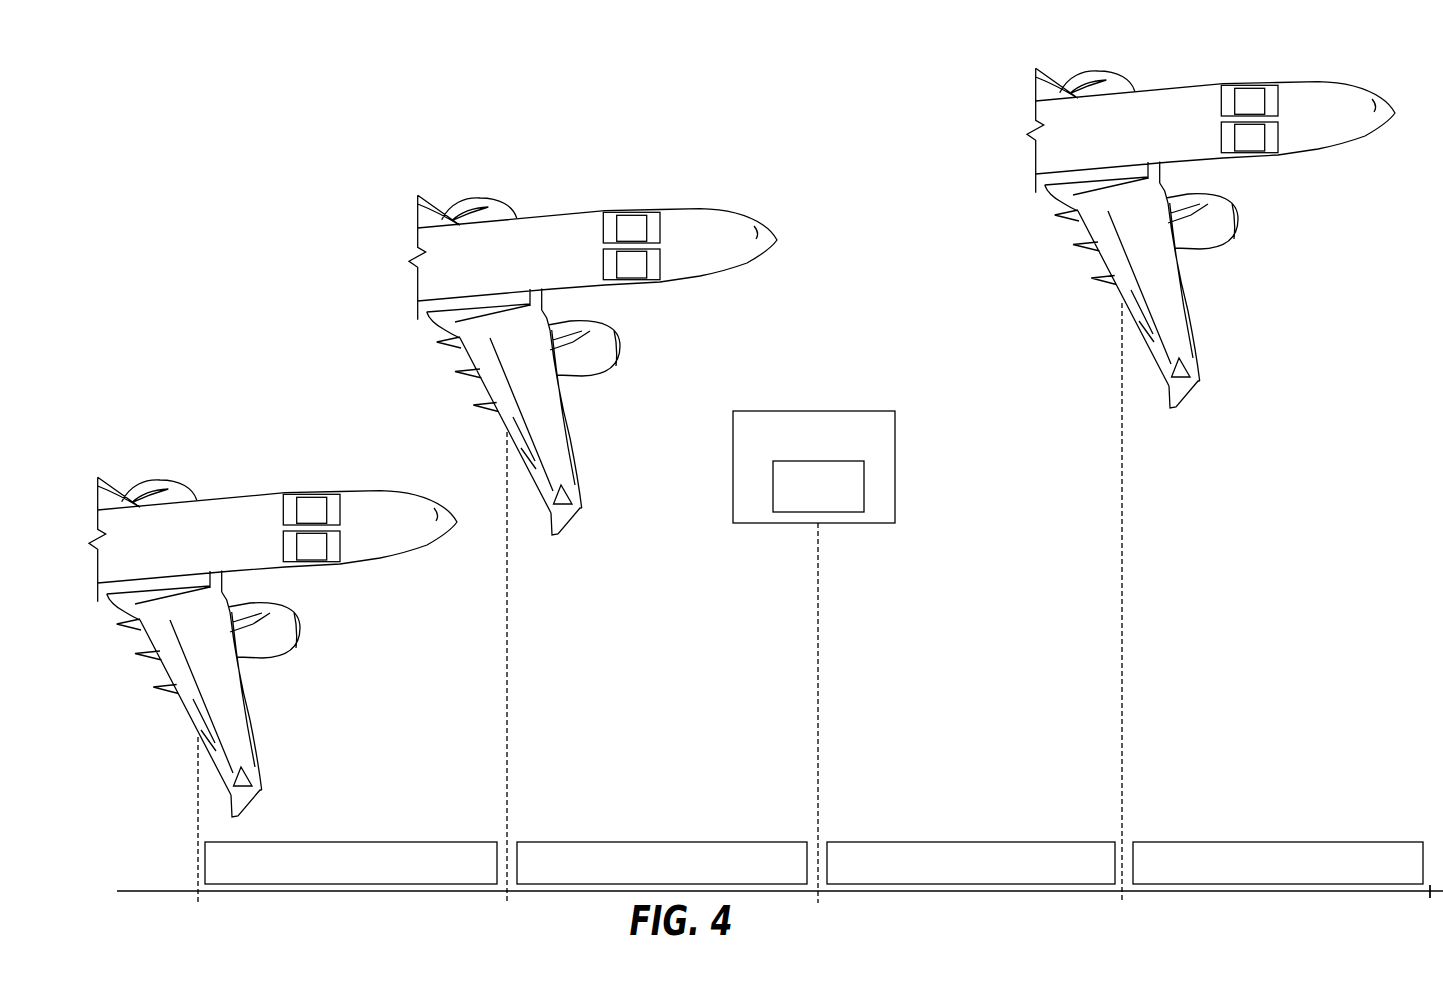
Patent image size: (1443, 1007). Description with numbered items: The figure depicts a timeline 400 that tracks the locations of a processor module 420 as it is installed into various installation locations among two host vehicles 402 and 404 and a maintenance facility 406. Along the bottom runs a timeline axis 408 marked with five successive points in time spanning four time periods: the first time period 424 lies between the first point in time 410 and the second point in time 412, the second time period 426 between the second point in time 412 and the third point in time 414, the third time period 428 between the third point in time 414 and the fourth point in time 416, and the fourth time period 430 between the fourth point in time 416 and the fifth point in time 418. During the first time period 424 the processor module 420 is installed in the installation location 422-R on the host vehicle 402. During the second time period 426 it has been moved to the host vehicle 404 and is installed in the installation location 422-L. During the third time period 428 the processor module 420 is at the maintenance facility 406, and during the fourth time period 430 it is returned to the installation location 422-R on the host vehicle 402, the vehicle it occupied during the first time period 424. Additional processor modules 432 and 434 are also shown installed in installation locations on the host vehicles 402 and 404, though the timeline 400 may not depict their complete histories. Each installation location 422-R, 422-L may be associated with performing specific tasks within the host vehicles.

The timeline 400 is at (212, 106).
The host vehicle 402 is at (427, 493).
The host vehicle 404 is at (748, 212).
The maintenance facility 406 is at (825, 411).
The timeline axis 408 is at (167, 898).
The first point in time 410 is at (198, 835).
The second point in time 412 is at (507, 682).
The third point in time 414 is at (818, 728).
The fourth point in time 416 is at (1122, 618).
The fifth point in time 418 is at (1428, 909).
The processor module 420 is at (298, 549).
The installation location 422-L is at (333, 494).
The installation location 422-R is at (338, 560).
The first time period 424 is at (351, 863).
The second time period 426 is at (662, 863).
The third time period 428 is at (971, 863).
The fourth time period 430 is at (1278, 863).
The processor module 432 is at (296, 510).
The processor module 434 is at (619, 269).